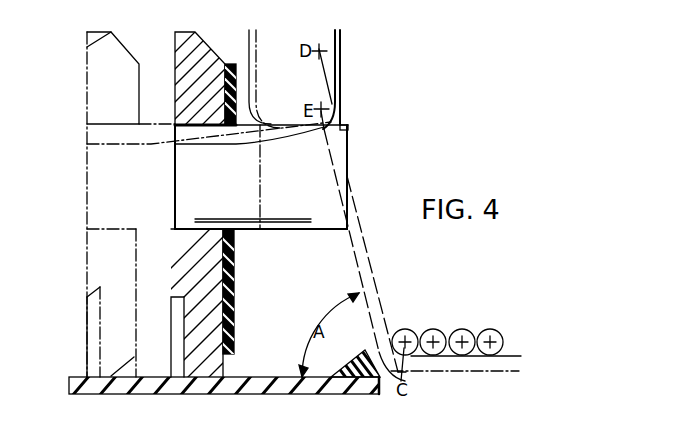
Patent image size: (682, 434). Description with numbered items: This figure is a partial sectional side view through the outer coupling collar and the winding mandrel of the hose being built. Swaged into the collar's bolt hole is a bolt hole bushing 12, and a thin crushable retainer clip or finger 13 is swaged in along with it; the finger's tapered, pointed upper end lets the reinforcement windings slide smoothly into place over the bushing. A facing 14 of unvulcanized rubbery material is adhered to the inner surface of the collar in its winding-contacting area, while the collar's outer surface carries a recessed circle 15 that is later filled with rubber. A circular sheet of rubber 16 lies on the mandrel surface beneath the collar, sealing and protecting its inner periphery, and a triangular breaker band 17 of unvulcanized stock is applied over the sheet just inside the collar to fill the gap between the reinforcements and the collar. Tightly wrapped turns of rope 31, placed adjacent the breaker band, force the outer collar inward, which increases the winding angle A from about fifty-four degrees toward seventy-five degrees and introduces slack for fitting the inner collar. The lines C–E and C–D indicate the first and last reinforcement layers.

The bolt hole bushing 12 is at (300, 227).
The retainer clip or finger 13 is at (343, 68).
The facing 14 is at (234, 307).
The recessed circle 15 is at (175, 310).
The circular sheet of rubber 16 is at (273, 391).
The breaker band 17 is at (379, 391).
The rope or cable 31 is at (492, 328).